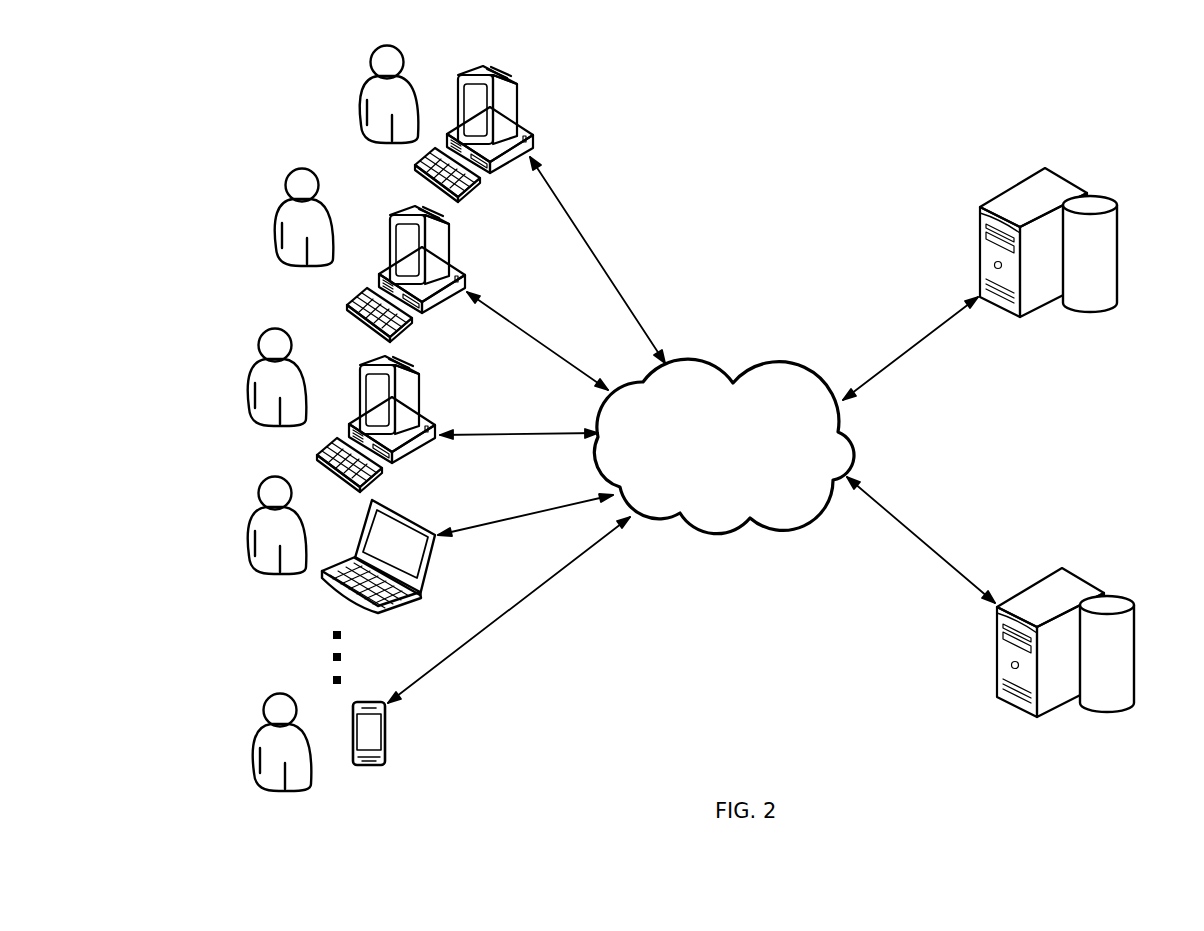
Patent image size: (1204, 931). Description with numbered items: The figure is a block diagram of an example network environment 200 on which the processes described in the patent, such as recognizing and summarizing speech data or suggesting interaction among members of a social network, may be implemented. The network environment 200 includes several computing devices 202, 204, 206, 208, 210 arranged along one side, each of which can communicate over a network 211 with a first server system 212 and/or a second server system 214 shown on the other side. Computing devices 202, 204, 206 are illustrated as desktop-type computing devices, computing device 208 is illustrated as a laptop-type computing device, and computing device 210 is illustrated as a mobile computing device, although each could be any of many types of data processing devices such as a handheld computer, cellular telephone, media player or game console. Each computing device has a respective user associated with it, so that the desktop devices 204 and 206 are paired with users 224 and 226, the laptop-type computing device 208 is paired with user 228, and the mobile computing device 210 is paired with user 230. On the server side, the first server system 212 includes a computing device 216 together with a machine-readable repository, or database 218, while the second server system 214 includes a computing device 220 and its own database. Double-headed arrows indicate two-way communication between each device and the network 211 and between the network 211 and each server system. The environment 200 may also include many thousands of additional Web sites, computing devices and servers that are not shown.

The network environment 200 is at (220, 92).
The computing device 202 is at (515, 96).
The computing device 204 is at (465, 266).
The computing device 206 is at (435, 414).
The laptop-type computing device 208 is at (398, 516).
The mobile computing device 210 is at (386, 757).
The network 211 is at (724, 446).
The first server system 212 is at (963, 195).
The second server system 214 is at (1009, 567).
The computing device 216 is at (1054, 176).
The database 218 is at (1124, 231).
The computing device 220 is at (1077, 581).
The user 224 is at (281, 210).
The user 226 is at (252, 367).
The user 228 is at (252, 520).
The user 230 is at (259, 734).